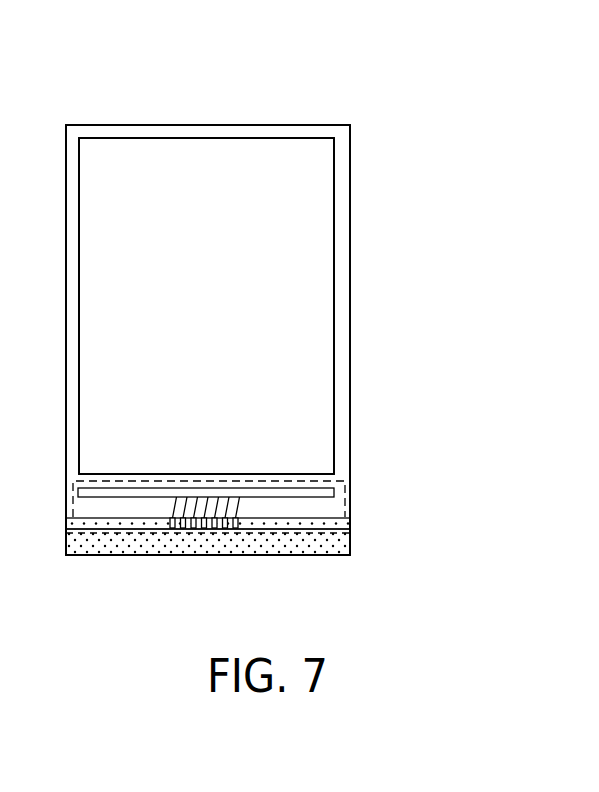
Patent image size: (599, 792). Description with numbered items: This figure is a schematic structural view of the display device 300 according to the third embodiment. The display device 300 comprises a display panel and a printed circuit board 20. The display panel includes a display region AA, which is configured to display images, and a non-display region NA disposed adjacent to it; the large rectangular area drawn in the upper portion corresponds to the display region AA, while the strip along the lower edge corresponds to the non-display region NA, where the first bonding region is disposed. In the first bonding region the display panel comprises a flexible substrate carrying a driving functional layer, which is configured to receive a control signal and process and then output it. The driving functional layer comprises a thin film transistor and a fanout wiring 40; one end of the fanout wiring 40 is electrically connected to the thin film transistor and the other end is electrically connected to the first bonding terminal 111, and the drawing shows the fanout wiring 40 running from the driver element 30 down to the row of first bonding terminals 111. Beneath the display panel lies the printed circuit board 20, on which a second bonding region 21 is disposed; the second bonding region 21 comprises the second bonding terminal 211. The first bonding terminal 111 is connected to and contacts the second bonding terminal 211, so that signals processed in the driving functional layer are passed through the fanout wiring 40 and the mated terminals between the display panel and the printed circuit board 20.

The display device 300 is at (134, 104).
The non-display region NA is at (343, 313).
The display region AA is at (308, 393).
The driver chip 30 is at (313, 488).
The first bonding terminal 111 is at (243, 523).
The second bonding region 21 is at (260, 533).
The printed circuit board 20 is at (338, 548).
The second bonding terminal 211 is at (185, 527).
The fanout wiring 40 is at (178, 500).